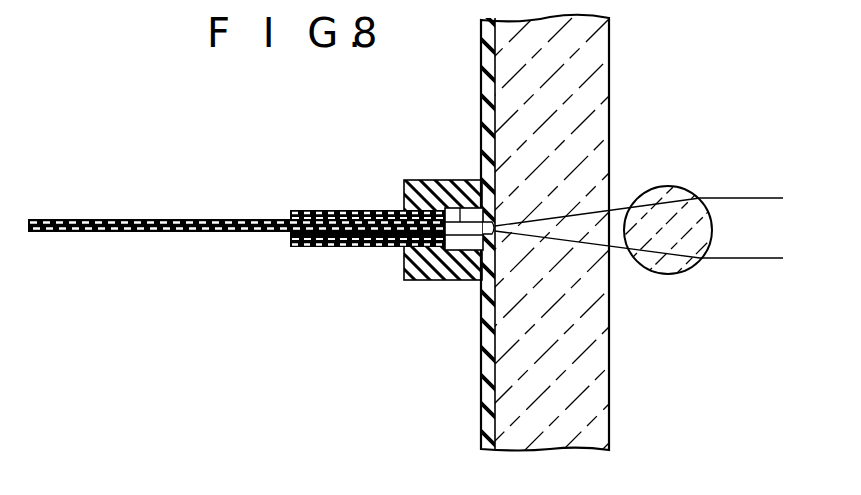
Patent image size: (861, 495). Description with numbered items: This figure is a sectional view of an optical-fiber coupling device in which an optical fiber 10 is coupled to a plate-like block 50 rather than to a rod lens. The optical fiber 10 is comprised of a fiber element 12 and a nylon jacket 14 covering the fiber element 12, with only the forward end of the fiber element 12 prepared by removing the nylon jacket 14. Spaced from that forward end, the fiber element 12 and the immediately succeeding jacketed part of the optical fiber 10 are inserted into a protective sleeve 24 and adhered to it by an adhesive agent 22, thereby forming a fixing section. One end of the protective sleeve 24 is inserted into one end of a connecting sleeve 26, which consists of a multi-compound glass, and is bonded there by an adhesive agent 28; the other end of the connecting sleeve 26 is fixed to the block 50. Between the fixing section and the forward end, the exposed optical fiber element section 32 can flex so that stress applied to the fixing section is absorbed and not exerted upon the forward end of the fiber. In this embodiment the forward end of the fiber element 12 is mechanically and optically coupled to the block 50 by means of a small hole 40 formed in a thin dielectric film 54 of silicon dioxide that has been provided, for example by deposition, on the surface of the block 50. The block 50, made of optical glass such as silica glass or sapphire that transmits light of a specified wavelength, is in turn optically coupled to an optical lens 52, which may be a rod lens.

The optical fiber 10 is at (236, 215).
The fiber element 12 is at (166, 219).
The nylon jacket 14 is at (148, 233).
The adhesive agent 22 is at (390, 218).
The protective sleeve 24 is at (330, 247).
The connecting sleeve 26 is at (442, 280).
The adhesive agent 28 is at (408, 250).
The optical fiber element section 32 is at (449, 207).
The small hole 40 is at (480, 221).
The plate-like block 50 is at (603, 409).
The optical lens 52 is at (672, 276).
The thin dielectric film 54 is at (487, 72).